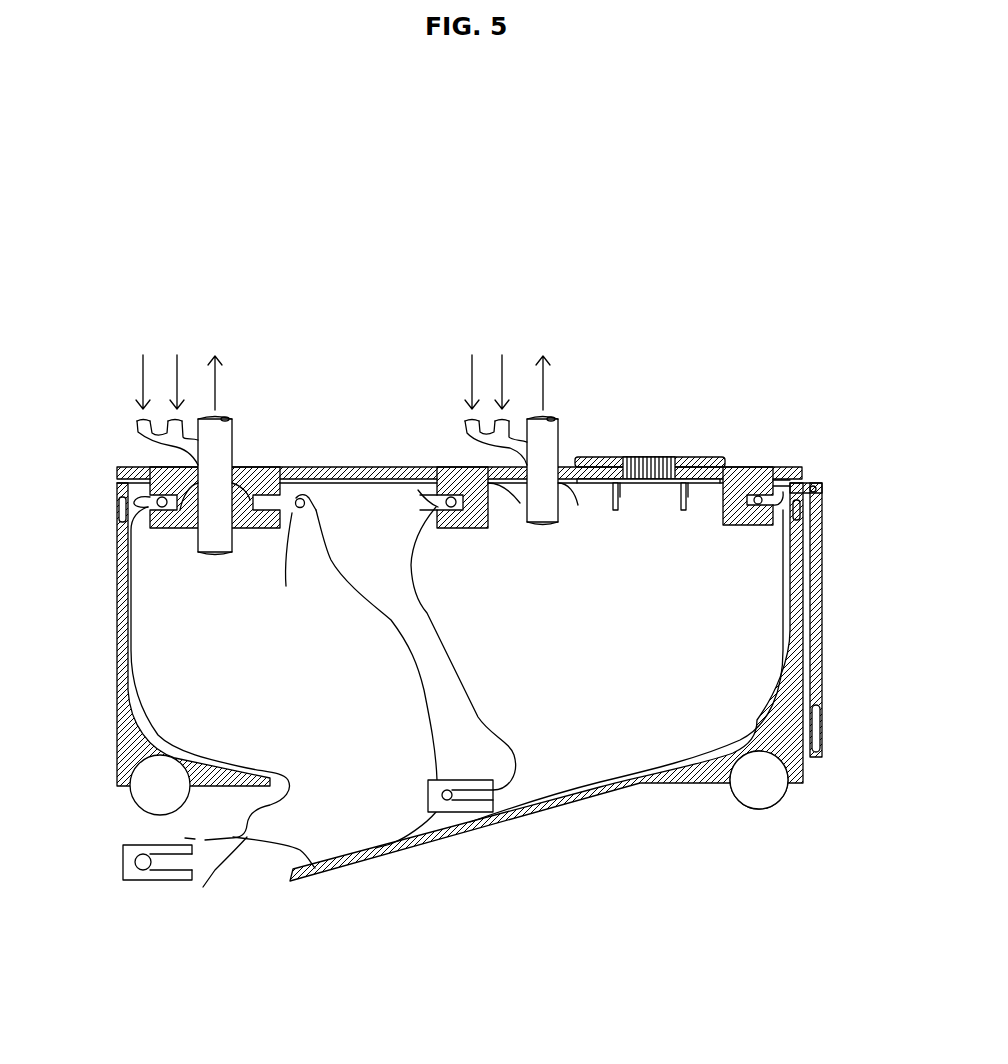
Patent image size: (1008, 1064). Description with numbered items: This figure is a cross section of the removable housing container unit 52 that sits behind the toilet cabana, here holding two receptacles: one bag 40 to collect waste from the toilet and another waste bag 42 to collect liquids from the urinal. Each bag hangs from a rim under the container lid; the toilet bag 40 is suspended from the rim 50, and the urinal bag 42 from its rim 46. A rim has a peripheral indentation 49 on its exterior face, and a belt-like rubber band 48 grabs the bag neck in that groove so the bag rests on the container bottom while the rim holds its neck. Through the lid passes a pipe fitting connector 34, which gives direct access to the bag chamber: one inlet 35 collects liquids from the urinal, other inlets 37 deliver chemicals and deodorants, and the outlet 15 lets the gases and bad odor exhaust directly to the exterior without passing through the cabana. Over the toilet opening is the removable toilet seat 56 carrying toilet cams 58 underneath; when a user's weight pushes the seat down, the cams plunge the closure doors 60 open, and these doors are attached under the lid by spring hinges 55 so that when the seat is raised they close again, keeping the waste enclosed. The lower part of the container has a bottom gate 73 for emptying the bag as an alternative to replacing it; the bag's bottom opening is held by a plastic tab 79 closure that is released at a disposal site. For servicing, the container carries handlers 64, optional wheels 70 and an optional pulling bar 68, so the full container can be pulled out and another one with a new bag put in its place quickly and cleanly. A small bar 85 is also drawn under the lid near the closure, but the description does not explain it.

The outlet 15 is at (382, 363).
The pipe fitting connector 34 is at (232, 450).
The inlet 35 is at (144, 363).
The connector inlets 37 is at (341, 366).
The bag 40 is at (457, 677).
The waste bag 42 is at (430, 718).
The rim 46 is at (173, 530).
The rubber band 48 is at (322, 517).
The peripheral indentation 49 is at (287, 568).
The rim 50 is at (451, 528).
The housing container unit 52 is at (118, 738).
The spring hinges 55 is at (602, 492).
The toilet seat 56 is at (692, 457).
The toilet cams 58 is at (643, 512).
The closure doors 60 is at (686, 512).
The handlers 64 is at (118, 505).
The pulling bar 68 is at (823, 758).
The wheels 70 is at (143, 812).
The bottom gate 73 is at (572, 797).
The plastic tab 79 is at (453, 778).
The bar 85 is at (660, 485).